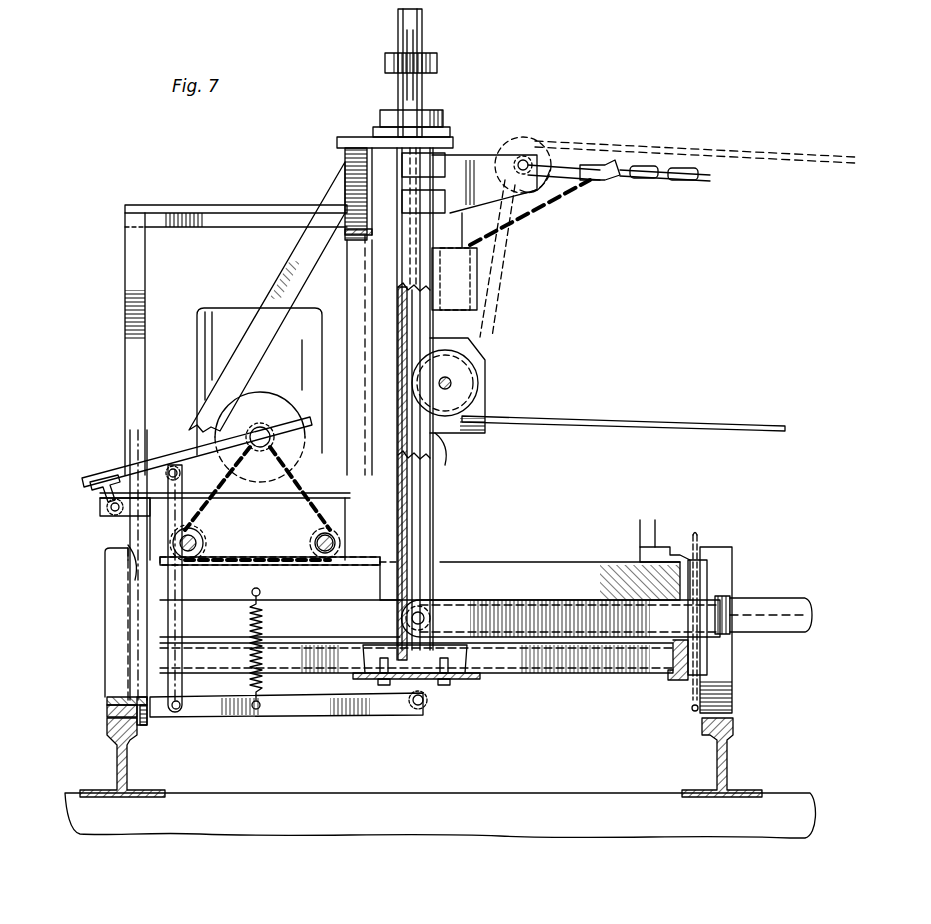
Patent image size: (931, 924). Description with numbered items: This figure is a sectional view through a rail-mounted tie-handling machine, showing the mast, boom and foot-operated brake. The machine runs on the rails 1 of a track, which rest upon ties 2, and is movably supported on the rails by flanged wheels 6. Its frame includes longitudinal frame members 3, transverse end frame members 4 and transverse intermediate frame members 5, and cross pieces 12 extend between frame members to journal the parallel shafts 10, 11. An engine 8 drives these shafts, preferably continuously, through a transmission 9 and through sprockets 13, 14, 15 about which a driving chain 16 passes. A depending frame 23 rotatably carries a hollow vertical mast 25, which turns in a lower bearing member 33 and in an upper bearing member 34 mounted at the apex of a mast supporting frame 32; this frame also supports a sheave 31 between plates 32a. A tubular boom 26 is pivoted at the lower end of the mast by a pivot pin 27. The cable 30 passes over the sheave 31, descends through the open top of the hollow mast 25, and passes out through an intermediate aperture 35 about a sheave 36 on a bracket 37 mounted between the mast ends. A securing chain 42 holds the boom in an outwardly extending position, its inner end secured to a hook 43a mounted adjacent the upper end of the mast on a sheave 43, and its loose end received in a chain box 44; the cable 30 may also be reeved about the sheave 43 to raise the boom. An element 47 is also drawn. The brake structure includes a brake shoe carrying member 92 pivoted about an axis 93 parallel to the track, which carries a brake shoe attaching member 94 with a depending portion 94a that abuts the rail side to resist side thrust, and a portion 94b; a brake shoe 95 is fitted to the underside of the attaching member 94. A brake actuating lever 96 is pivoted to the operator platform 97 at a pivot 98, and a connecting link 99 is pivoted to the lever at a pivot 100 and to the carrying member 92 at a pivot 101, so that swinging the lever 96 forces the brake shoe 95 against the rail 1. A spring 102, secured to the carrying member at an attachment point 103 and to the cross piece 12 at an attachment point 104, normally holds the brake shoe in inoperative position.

The rail 1 is at (110, 752).
The tie 2 is at (395, 800).
The longitudinal frame member 3 is at (672, 560).
The transverse end frame member 4 is at (535, 565).
The transverse intermediate frame member 5 is at (537, 660).
The flanged wheel 6 is at (105, 628).
The engine 8 is at (218, 318).
The transmission 9 is at (285, 400).
The driven shaft 10 is at (327, 556).
The driven shaft 11 is at (204, 548).
The cross piece 12 is at (330, 595).
The sprocket 13 is at (262, 428).
The sprocket 14 is at (325, 543).
The sprocket 15 is at (203, 538).
The driving chain 16 is at (295, 475).
The depending frame 23 is at (678, 680).
The hollow vertical mast 25 is at (433, 492).
The tubular boom 26 is at (765, 600).
The pivot pin 27 is at (410, 618).
The cable 30 is at (412, 326).
The sheave 31 is at (418, 40).
The mast supporting frame 32 is at (360, 274).
The plate 32a is at (407, 30).
The lower bearing member 33 is at (420, 660).
The upper bearing member 34 is at (443, 112).
The intermediate aperture 35 is at (445, 440).
The sheave 36 is at (465, 378).
The bracket 37 is at (480, 400).
The securing chain 42 is at (682, 185).
The sheave 43 is at (528, 138).
The hook 43a is at (608, 185).
The chain box 44 is at (470, 270).
The pin 47 is at (708, 560).
The brake shoe carrying member 92 is at (242, 715).
The pivot axis 93 is at (414, 706).
The brake shoe attaching member 94 is at (142, 705).
The depending portion 94a is at (152, 722).
The bracket plate 94b is at (118, 697).
The brake shoe 95 is at (107, 710).
The brake actuating lever 96 is at (170, 455).
The operator platform 97 is at (100, 515).
The pivot 98 is at (105, 506).
The connecting link 99 is at (183, 626).
The pivot 100 is at (180, 472).
The pivot 101 is at (178, 710).
The spring 102 is at (262, 630).
The spring attachment point 103 is at (258, 702).
The spring attachment point 104 is at (260, 592).